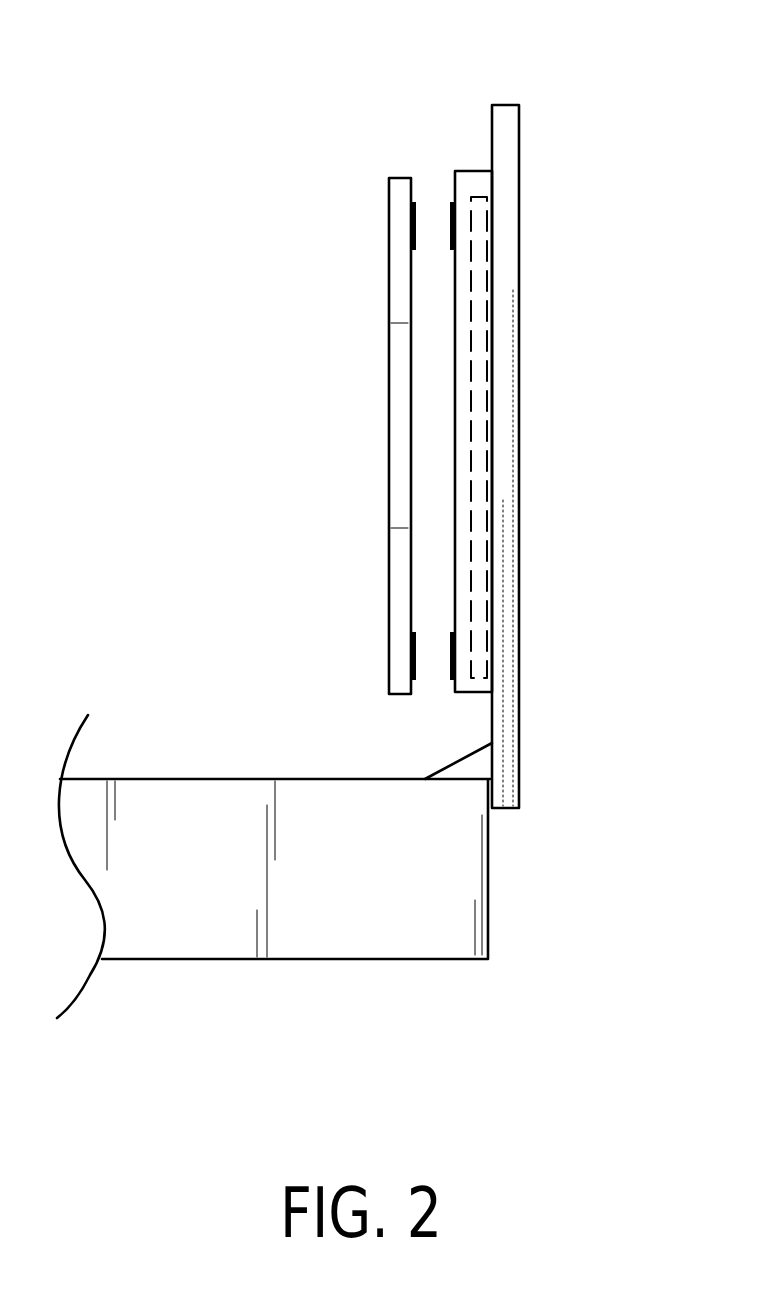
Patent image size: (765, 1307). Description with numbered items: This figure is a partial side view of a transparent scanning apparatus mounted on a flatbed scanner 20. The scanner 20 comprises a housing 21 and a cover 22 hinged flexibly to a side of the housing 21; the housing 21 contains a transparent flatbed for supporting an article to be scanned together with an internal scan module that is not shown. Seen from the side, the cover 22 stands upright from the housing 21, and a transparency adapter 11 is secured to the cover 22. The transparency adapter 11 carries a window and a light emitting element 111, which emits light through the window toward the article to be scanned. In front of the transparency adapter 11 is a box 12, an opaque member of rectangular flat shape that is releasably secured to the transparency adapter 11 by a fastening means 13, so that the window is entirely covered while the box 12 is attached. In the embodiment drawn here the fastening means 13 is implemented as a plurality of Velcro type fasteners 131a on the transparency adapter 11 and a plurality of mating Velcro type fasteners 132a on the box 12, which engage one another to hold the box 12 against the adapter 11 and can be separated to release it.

The transparency adapter 11 is at (542, 424).
The light emitting element 111 is at (478, 325).
The box 12 is at (396, 505).
The fastening means 13 is at (332, 348).
The Velcro type fasteners 131a is at (453, 237).
The mating Velcro type fasteners 132a is at (411, 218).
The flatbed scanner 20 is at (274, 834).
The housing 21 is at (270, 933).
The cover 22 is at (520, 418).